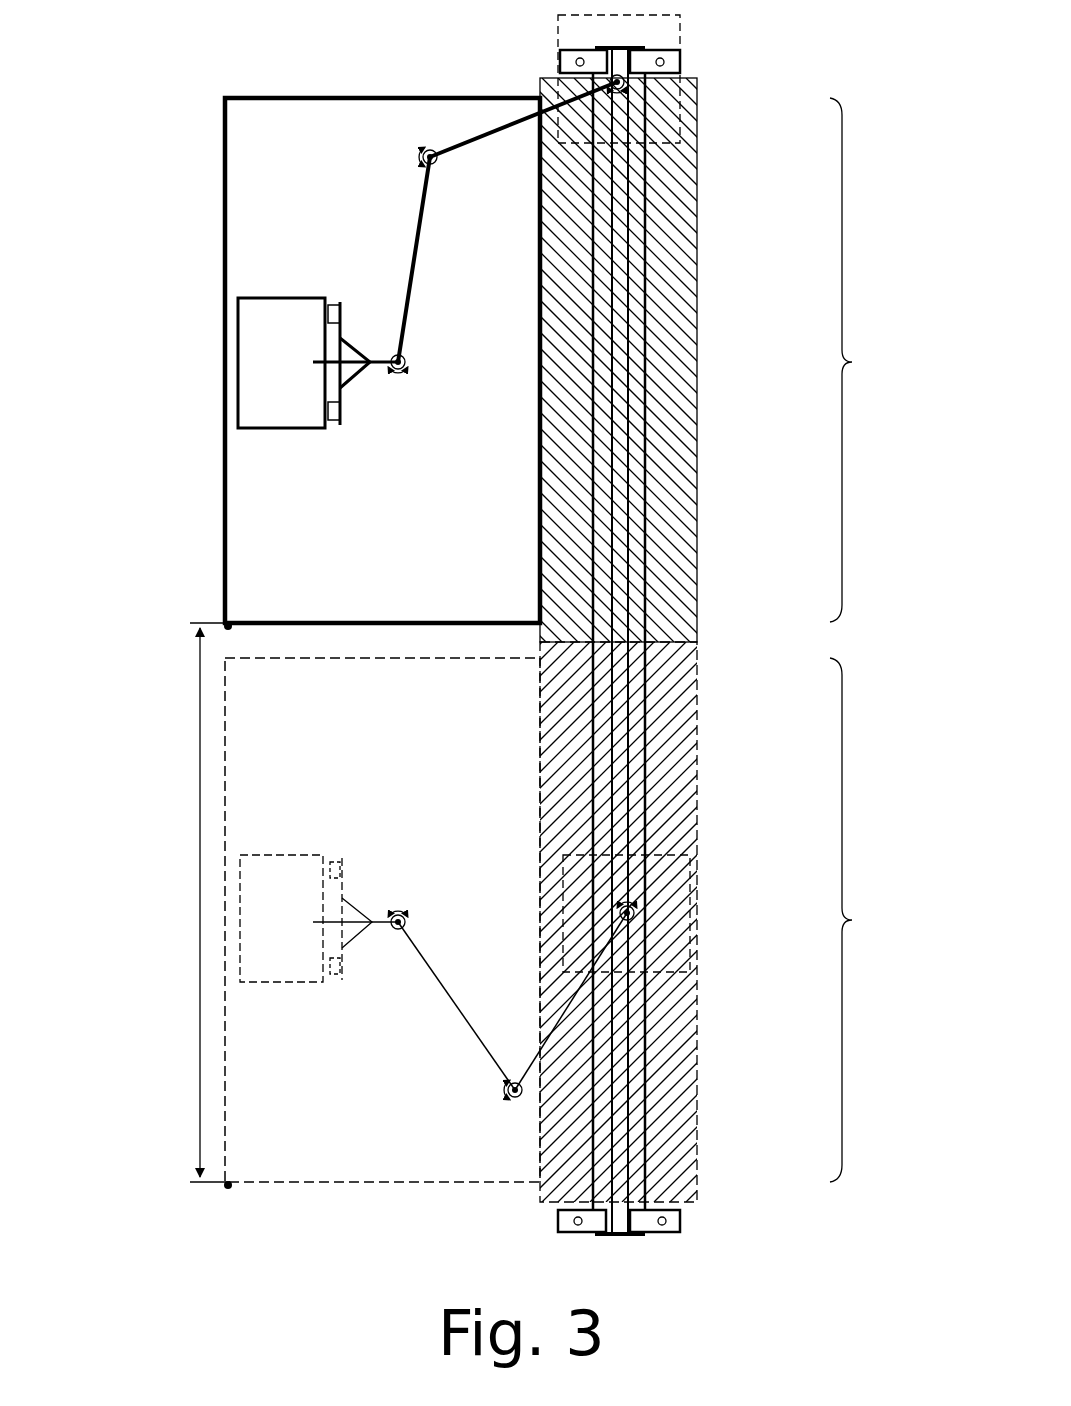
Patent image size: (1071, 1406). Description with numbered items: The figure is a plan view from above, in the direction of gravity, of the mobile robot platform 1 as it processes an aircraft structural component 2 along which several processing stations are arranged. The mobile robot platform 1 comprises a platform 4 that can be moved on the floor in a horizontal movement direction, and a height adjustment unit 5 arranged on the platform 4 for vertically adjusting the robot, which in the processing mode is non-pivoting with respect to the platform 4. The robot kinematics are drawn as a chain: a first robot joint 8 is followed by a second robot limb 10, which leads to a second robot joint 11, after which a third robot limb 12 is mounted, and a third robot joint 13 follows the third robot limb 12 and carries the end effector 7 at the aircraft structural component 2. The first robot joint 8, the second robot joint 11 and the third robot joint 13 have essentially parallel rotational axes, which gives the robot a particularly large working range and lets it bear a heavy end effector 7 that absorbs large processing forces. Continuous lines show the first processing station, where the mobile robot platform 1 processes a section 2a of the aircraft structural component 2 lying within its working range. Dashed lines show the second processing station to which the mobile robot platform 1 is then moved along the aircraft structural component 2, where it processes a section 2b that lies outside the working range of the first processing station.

The mobile robot platform 1 is at (128, 75).
The aircraft structural component 2 is at (620, 345).
The section 2a is at (865, 360).
The section 2b is at (866, 920).
The platform 4 is at (285, 93).
The height adjustment unit 5 is at (232, 323).
The end effector 7 is at (683, 40).
The first robot joint 8 is at (410, 358).
The second robot limb 10 is at (423, 225).
The second robot joint 11 is at (430, 150).
The third robot limb 12 is at (493, 125).
The third robot joint 13 is at (628, 80).